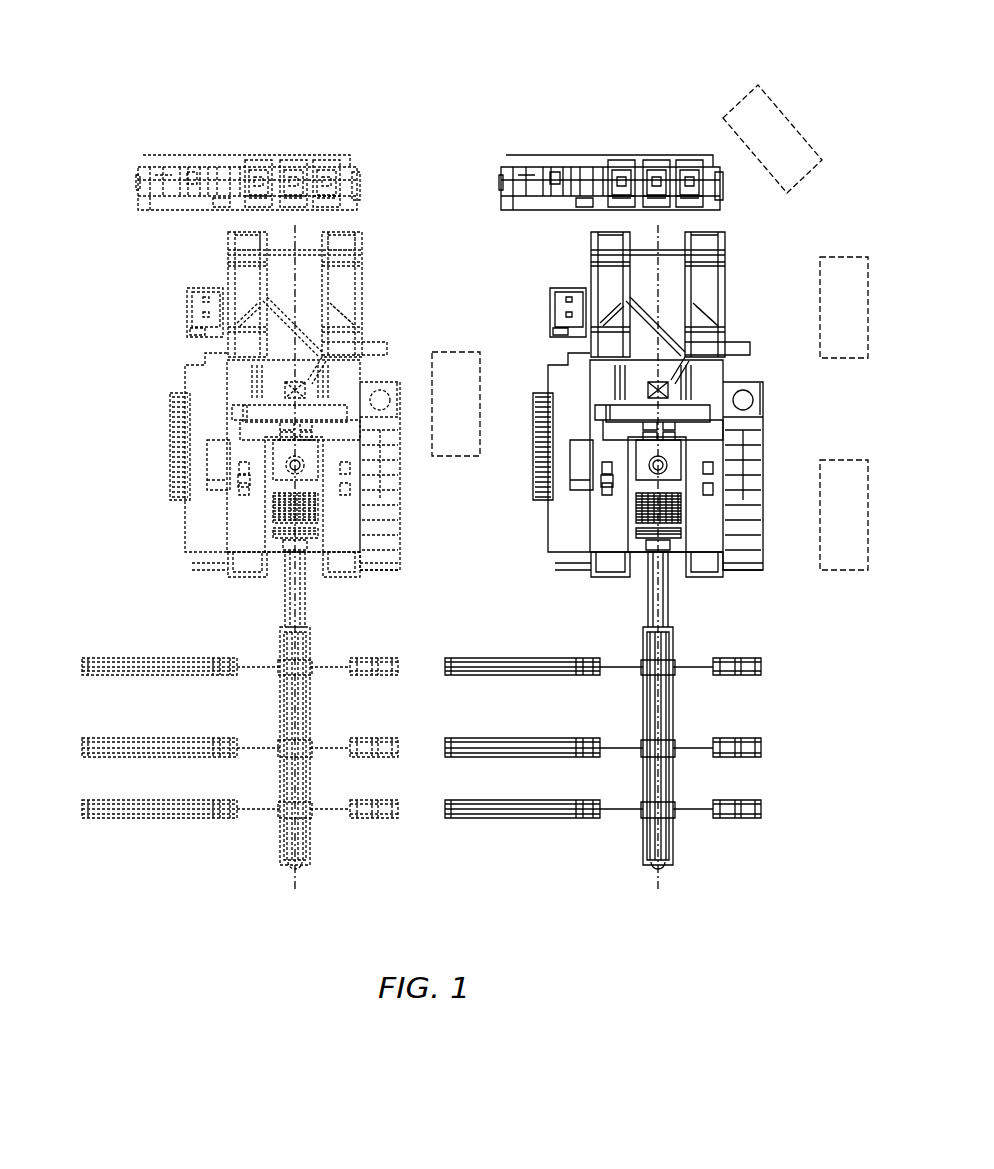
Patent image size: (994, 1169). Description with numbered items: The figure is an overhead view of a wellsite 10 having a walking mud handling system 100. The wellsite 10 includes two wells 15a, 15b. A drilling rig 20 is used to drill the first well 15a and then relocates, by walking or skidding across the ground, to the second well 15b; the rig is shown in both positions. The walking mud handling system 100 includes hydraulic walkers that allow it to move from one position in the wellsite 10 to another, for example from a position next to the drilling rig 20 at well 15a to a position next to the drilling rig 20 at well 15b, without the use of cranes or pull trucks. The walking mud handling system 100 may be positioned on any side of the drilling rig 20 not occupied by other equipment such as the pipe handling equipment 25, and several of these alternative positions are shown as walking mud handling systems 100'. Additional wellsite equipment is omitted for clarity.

The wellsite 10 is at (298, 43).
The drilling rig 20 is at (118, 256).
The walking mud handling system 100 is at (429, 129).
The walking mud handling systems 100' is at (649, 337).
The well 15a is at (283, 463).
The well 15b is at (668, 462).
The pipe handling equipment 25 is at (230, 840).